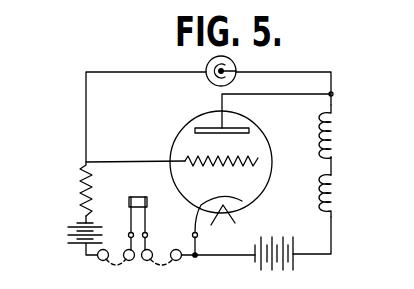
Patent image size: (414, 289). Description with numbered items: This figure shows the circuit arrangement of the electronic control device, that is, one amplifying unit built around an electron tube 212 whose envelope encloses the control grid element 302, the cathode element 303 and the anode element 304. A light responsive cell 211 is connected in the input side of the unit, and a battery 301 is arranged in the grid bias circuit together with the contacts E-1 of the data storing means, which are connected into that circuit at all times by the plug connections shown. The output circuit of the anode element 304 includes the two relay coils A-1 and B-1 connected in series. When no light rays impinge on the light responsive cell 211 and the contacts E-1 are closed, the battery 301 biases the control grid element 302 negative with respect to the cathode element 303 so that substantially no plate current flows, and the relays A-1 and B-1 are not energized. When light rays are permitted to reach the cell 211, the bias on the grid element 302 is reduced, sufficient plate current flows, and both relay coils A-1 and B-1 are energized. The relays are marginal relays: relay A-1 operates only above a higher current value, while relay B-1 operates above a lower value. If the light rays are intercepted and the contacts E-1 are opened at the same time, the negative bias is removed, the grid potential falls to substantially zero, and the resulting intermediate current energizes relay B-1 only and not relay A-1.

The light responsive cell 211 is at (208, 80).
The electron tube 212 is at (281, 141).
The anode element 304 is at (236, 127).
The control grid element 302 is at (196, 158).
The cathode element 303 is at (241, 204).
The battery 301 is at (67, 238).
The contacts E-1 is at (139, 196).
The relay coil A-1 is at (340, 139).
The relay coil B-1 is at (340, 197).